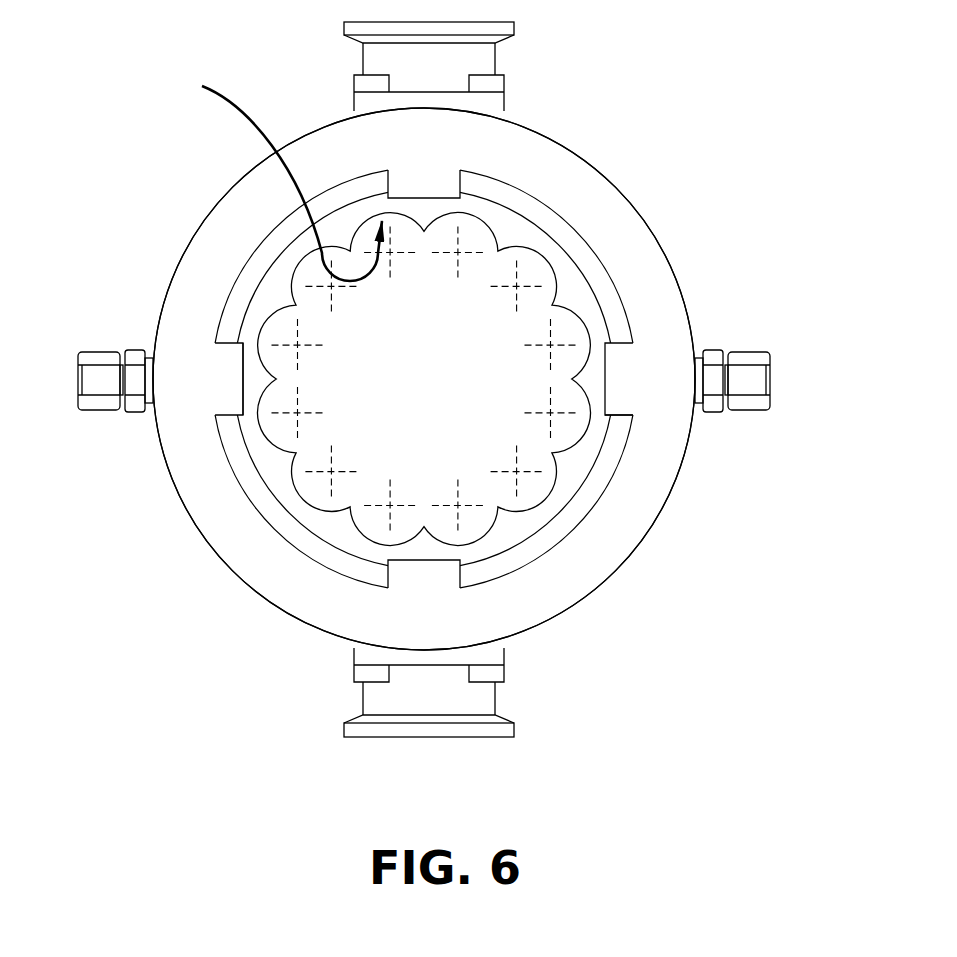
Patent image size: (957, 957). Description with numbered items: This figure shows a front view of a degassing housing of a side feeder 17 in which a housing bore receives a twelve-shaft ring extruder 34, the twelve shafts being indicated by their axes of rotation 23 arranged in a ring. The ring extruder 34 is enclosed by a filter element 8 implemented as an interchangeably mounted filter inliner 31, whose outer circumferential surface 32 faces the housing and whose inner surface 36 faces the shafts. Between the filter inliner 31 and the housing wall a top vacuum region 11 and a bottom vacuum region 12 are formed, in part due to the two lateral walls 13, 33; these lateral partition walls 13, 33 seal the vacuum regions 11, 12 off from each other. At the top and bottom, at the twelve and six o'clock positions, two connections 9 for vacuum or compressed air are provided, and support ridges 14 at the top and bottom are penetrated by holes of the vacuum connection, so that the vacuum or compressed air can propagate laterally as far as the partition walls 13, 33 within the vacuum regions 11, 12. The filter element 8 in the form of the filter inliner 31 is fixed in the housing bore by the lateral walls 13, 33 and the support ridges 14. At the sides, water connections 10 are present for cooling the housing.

The filter element 8 is at (289, 270).
The connection for vacuum or compressed air 9 is at (364, 62).
The water connection 10 is at (101, 346).
The top vacuum region 11 is at (488, 187).
The bottom vacuum region 12 is at (322, 554).
The lateral wall 13 is at (224, 357).
The support ridge 14 is at (435, 180).
The side feeder 17 is at (625, 235).
The axis of rotation 23 is at (327, 470).
The filter inliner 31 is at (424, 379).
The outer circumferential surface of the filter inliner 32 is at (239, 387).
The lateral wall 33 is at (626, 397).
The twelve-shaft ring extruder 34 is at (654, 271).
The inner surface of the filter inliner 36 is at (276, 176).